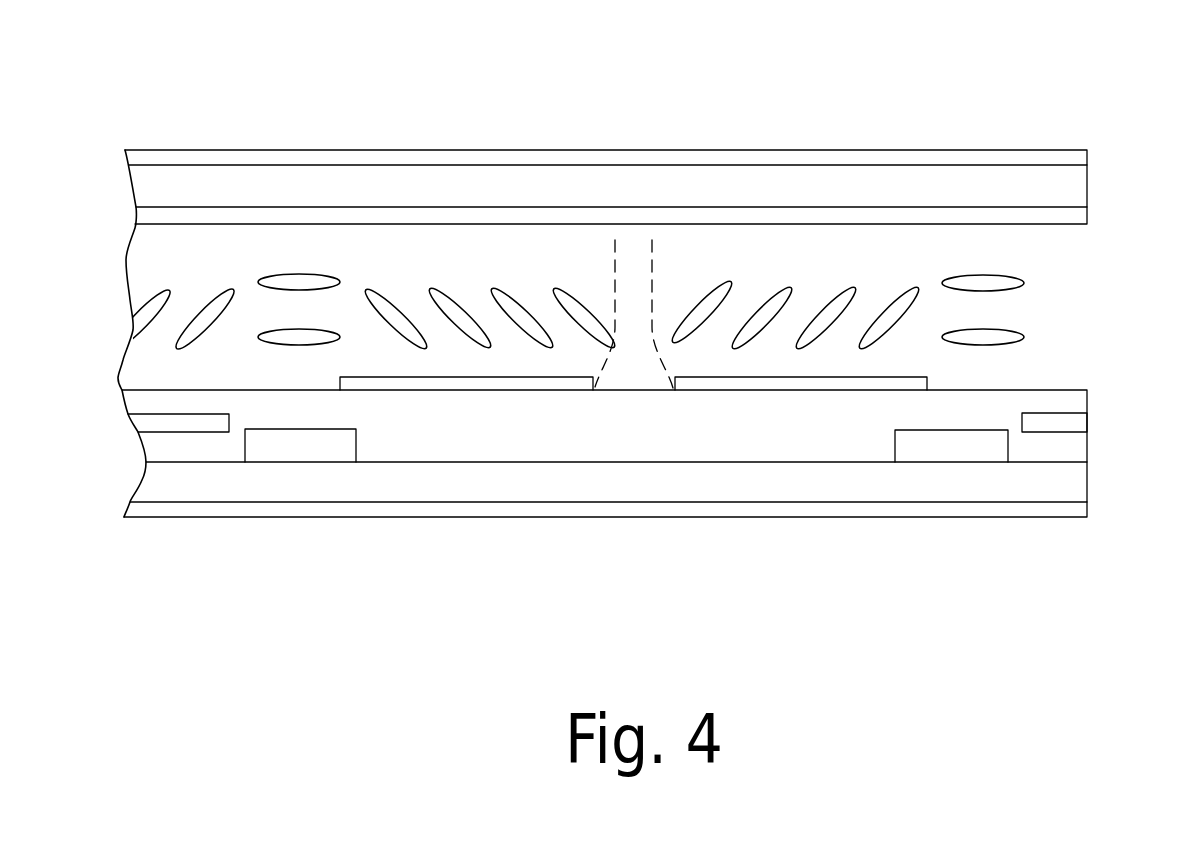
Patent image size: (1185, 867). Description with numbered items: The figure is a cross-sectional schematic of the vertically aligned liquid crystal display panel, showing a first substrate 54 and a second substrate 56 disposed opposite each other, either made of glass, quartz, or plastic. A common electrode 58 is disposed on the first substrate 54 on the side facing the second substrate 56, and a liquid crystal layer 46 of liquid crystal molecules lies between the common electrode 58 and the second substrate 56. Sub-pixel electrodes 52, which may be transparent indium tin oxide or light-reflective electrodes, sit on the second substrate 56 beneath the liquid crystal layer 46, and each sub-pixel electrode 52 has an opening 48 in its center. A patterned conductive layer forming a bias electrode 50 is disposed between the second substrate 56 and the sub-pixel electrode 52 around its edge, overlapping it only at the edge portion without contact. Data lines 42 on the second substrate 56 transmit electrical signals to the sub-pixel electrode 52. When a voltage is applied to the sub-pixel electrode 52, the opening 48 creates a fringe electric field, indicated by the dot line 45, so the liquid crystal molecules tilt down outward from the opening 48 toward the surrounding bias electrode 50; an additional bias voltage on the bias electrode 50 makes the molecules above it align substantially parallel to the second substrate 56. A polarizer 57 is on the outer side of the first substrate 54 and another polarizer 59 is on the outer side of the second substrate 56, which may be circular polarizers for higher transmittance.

The data line 42 is at (205, 427).
The dot line 45 is at (652, 248).
The liquid crystal layer 46 is at (1013, 283).
The opening 48 is at (632, 378).
The bias electrode 50 is at (300, 458).
The sub-pixel electrode 52 is at (745, 383).
The first substrate 54 is at (1073, 183).
The second substrate 56 is at (1078, 487).
The polarizer 57 is at (1050, 155).
The common electrode 58 is at (1077, 212).
The polarizer 59 is at (1070, 510).